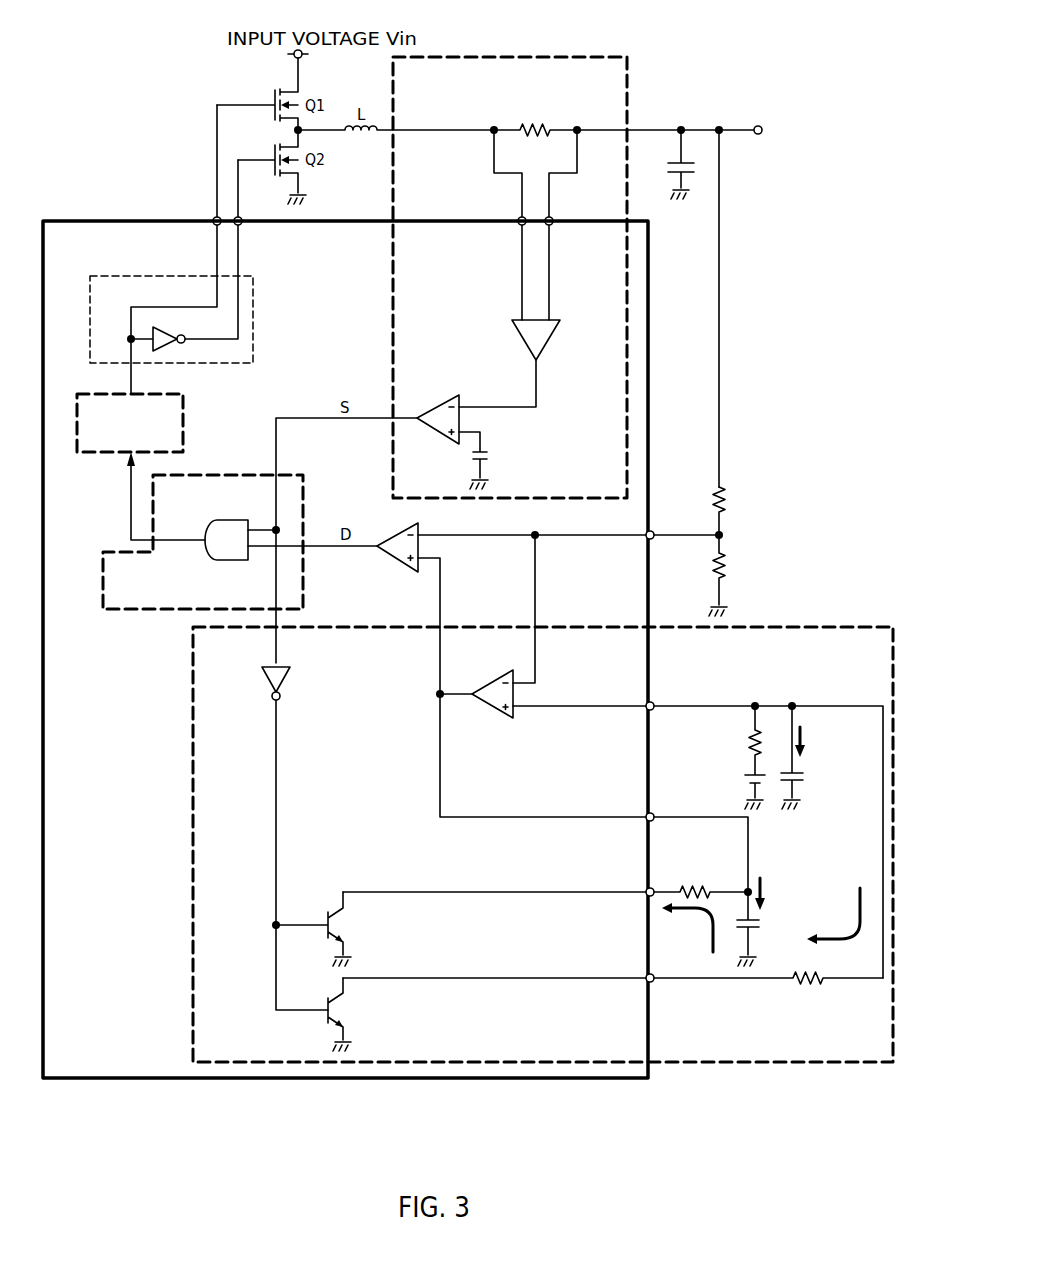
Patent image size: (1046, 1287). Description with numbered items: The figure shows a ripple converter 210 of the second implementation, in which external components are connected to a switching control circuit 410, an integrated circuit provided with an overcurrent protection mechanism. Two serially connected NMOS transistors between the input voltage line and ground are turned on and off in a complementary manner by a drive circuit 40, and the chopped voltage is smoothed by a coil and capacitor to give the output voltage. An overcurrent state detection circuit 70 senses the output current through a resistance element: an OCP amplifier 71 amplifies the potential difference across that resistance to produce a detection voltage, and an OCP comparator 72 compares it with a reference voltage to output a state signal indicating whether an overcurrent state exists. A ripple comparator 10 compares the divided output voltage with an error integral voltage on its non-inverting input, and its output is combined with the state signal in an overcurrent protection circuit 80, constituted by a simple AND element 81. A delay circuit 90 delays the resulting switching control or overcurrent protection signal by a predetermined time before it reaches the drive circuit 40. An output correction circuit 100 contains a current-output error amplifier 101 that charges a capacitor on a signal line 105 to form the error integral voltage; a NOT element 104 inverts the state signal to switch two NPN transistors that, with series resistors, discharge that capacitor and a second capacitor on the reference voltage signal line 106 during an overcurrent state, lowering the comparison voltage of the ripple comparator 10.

The ripple converter 210 is at (737, 101).
The overcurrent state detection circuit 70 is at (536, 277).
The OCP amplifier 71 is at (550, 342).
The OCP comparator 72 is at (446, 400).
The switching control circuit 410 is at (137, 221).
The drive circuit 40 is at (253, 297).
The delay circuit 90 is at (183, 419).
The overcurrent protection circuit 80 is at (227, 522).
The AND element 81 is at (223, 520).
The ripple comparator 10 is at (385, 563).
The signal line 105 is at (441, 588).
The error amplifier 101 is at (495, 680).
The signal line 106 is at (566, 704).
The NOT element 104 is at (264, 684).
The output correction circuit 100 is at (837, 627).